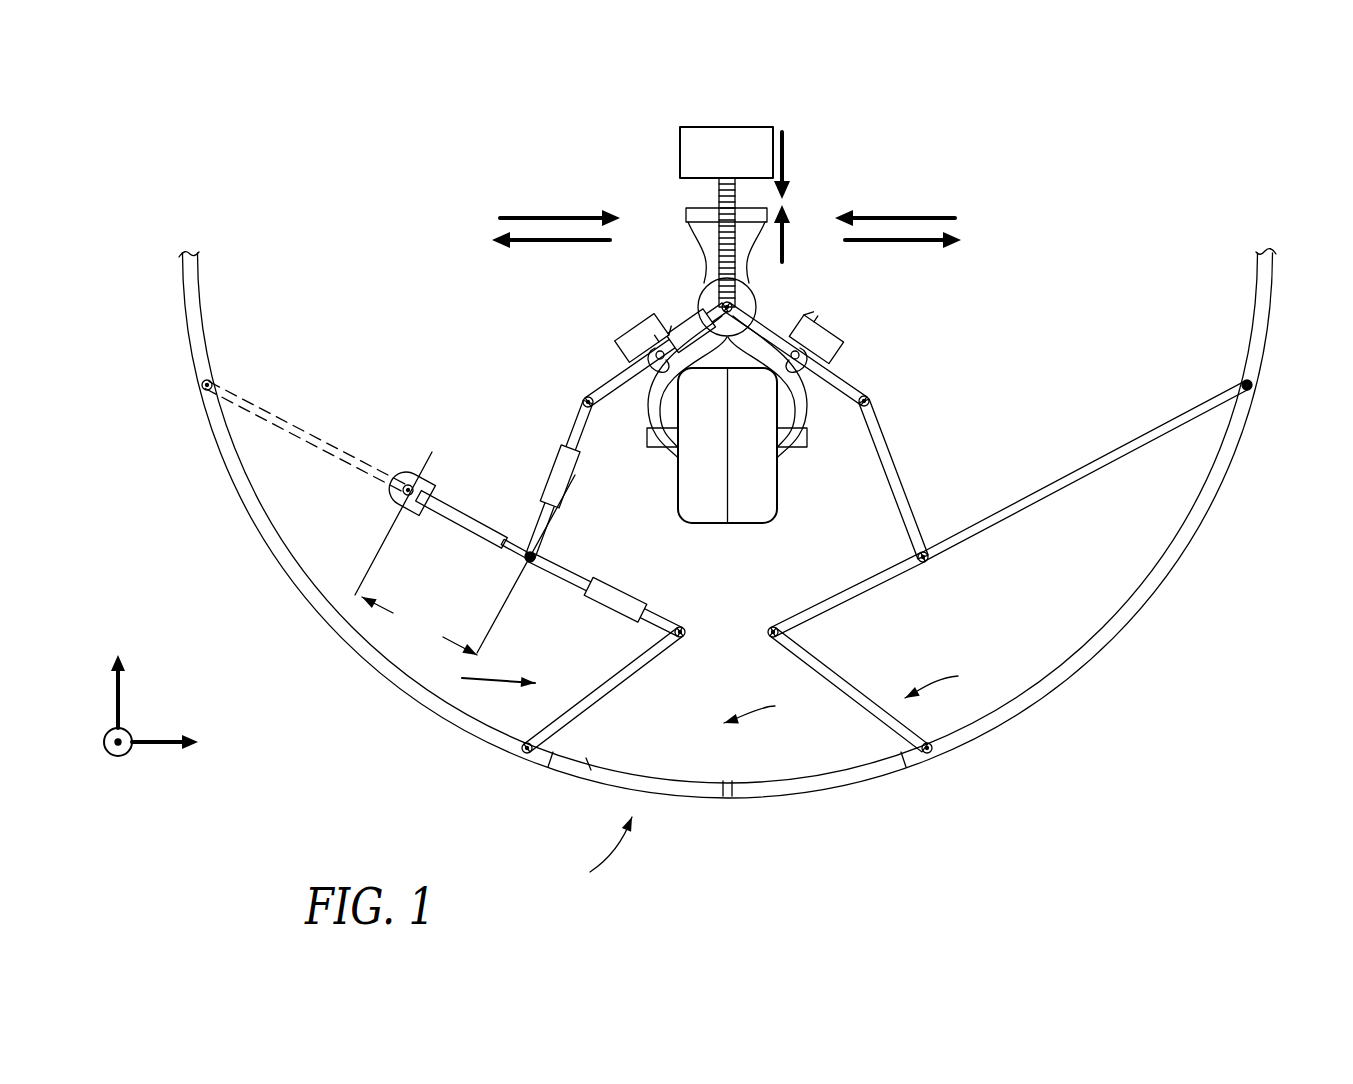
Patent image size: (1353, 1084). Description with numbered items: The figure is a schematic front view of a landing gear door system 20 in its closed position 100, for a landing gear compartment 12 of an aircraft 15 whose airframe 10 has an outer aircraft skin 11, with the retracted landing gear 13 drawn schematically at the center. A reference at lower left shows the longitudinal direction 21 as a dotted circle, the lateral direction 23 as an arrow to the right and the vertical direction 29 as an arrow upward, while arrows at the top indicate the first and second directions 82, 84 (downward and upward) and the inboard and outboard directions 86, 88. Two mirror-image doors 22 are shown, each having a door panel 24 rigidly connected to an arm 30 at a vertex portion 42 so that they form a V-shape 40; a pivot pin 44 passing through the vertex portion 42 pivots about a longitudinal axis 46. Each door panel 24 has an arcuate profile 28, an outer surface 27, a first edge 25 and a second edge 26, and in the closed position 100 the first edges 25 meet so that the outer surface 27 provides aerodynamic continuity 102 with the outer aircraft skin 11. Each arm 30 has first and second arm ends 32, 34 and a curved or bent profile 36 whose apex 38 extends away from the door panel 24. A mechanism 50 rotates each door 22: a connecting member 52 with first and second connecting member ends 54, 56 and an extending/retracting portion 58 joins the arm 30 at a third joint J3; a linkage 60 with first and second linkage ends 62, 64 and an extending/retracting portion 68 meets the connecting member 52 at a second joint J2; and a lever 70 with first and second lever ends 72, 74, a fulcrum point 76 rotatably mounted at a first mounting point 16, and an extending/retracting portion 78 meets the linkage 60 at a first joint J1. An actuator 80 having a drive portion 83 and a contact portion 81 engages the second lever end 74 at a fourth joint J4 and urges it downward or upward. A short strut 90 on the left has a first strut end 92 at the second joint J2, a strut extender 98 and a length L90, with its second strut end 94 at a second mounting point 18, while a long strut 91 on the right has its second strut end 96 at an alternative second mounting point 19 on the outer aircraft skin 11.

The airframe 10 is at (315, 610).
The outer aircraft skin 11 is at (727, 523).
The landing gear compartment 12 is at (1017, 259).
The landing gear 13 is at (805, 448).
The aircraft 15 is at (1112, 695).
The first mounting point 16 is at (818, 335).
The second mounting point 18 is at (409, 491).
The alternative second mounting point 19 is at (199, 392).
The landing gear door system 20 is at (415, 300).
The longitudinal direction 21 is at (73, 758).
The door 22 is at (775, 766).
The lateral direction 23 is at (203, 758).
The door panel 24 is at (647, 783).
The first edge 25 is at (730, 797).
The second edge 26 is at (550, 765).
The outer surface 27 is at (665, 798).
The arcuate profile 28 is at (569, 781).
The vertical direction 29 is at (103, 654).
The arm 30 is at (651, 652).
The first arm end 32 is at (547, 740).
The second arm end 34 is at (672, 630).
The curved or bent profile 36 is at (482, 675).
The apex 38 is at (600, 690).
The V-shape 40 is at (764, 707).
The vertex portion 42 is at (590, 766).
The pivot pin 44 is at (522, 760).
The longitudinal axis 46 is at (522, 720).
The mechanism 50 is at (372, 366).
The connecting member 52 is at (577, 588).
The first connecting member end 54 is at (682, 622).
The second connecting member end 56 is at (563, 560).
The extending/retracting portion 58 is at (614, 600).
The linkage 60 is at (556, 456).
The first linkage end 62 is at (545, 530).
The second linkage end 64 is at (590, 418).
The extending/retracting portion 68 is at (575, 478).
The lever 70 is at (612, 372).
The first lever end 72 is at (584, 398).
The second lever end 74 is at (706, 290).
The fulcrum point 76 is at (656, 364).
The extending/retracting portion 78 is at (691, 331).
The actuator 80 is at (660, 135).
The contact portion 81 is at (718, 198).
The first direction 82 is at (787, 155).
The drive portion 83 is at (713, 168).
The second direction 84 is at (787, 250).
The inboard direction 86 is at (548, 216).
The outboard direction 88 is at (555, 242).
The short strut 90 is at (505, 548).
The long strut 91 is at (348, 438).
The first strut end 92 is at (516, 549).
The second strut end 94 is at (408, 490).
The second strut end 96 is at (244, 400).
The strut extender 98 is at (462, 520).
The closed position 100 is at (850, 797).
The aerodynamic continuity 102 is at (927, 748).
The first joint J1 is at (588, 400).
The second joint J2 is at (528, 562).
The third joint J3 is at (686, 630).
The fourth joint J4 is at (735, 306).
The strut length L90 is at (465, 555).